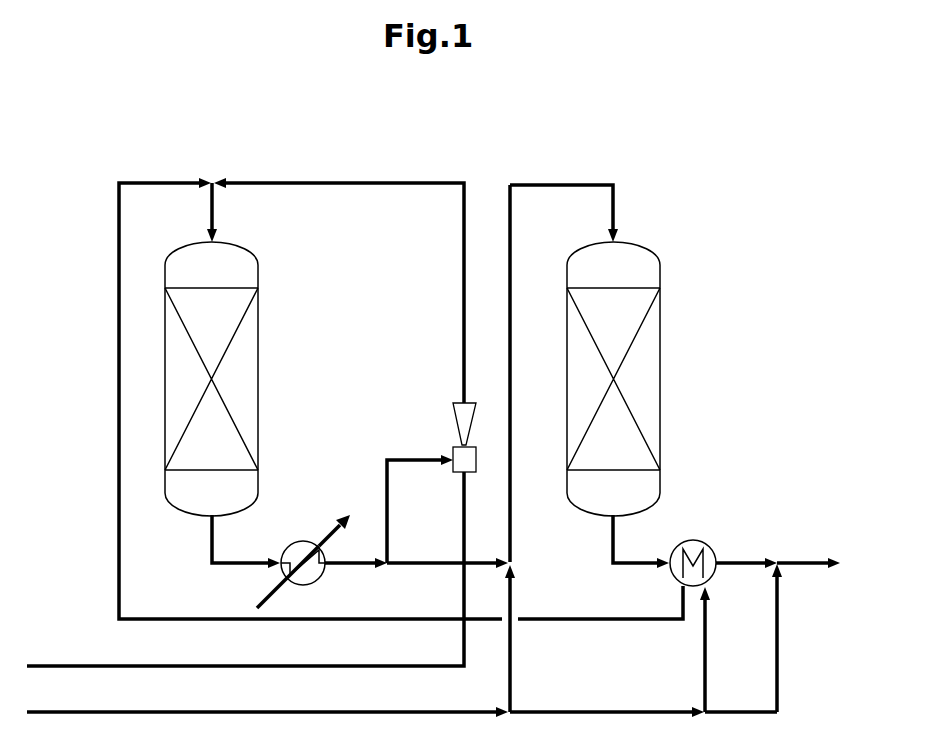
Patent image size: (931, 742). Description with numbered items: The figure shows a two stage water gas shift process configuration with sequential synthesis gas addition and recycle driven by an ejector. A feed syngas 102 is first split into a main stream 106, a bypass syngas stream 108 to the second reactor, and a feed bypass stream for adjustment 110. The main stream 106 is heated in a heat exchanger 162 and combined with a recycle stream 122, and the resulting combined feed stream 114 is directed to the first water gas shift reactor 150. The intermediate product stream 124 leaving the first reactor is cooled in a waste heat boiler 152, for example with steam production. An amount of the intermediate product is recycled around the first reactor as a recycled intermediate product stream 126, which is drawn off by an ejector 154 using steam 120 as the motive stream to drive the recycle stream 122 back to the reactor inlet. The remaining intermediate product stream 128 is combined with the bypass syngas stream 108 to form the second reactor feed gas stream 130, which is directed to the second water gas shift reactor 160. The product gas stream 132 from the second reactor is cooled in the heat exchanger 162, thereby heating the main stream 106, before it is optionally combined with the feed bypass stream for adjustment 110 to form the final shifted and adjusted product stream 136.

The feed syngas 102 is at (62, 712).
The main stream 106 is at (707, 686).
The bypass syngas stream 108 is at (512, 686).
The feed bypass stream for adjustment 110 is at (779, 686).
The combined feed stream 114 is at (213, 215).
The steam 120 is at (62, 666).
The recycle stream 122 is at (294, 174).
The intermediate product stream 124 is at (222, 563).
The recycled intermediate product stream 126 is at (393, 460).
The remaining intermediate product stream 128 is at (410, 563).
The second reactor feed gas stream 130 is at (554, 186).
The product gas stream 132 is at (621, 563).
The shifted and adjusted product stream 136 is at (791, 563).
The first water gas shift reactor 150 is at (258, 380).
The waste heat boiler 152 is at (322, 580).
The ejector 154 is at (453, 412).
The second water gas shift reactor 160 is at (660, 380).
The heat exchanger 162 is at (700, 542).